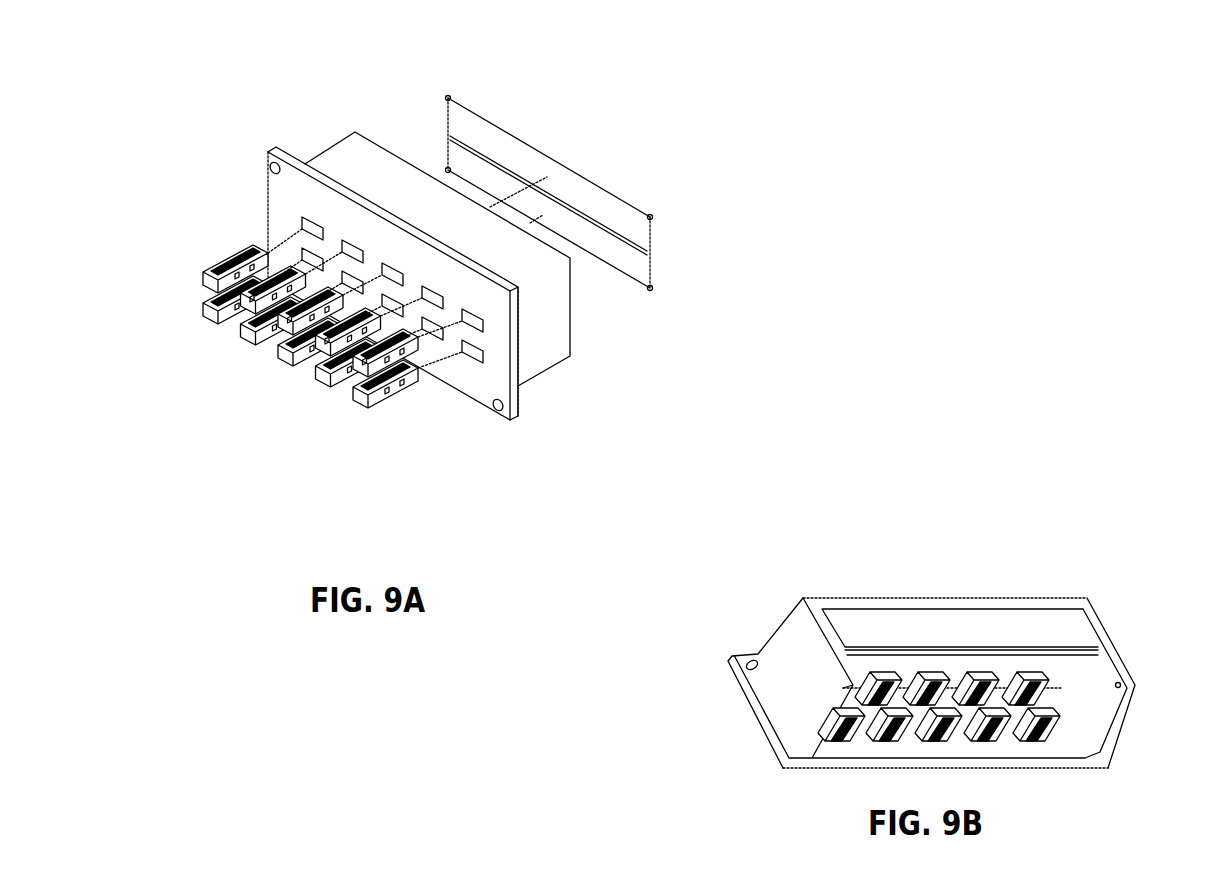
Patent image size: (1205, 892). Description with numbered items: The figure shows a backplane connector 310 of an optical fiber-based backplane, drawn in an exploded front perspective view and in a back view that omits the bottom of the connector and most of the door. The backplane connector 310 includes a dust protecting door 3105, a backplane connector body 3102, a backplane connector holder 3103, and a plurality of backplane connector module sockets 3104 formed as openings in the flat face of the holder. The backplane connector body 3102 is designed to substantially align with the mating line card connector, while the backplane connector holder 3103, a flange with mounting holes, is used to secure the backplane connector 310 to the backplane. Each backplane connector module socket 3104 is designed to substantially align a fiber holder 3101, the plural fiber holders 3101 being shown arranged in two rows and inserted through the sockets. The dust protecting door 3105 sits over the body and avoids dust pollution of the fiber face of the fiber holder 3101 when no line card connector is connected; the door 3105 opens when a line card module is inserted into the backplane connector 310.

In FIG. 9A, the backplane connector 310 is at (407, 293).
In FIG. 9A, the fiber holder 3101 is at (210, 262).
In FIG. 9B, the fiber holder 3101 is at (934, 658).
In FIG. 9A, the backplane connector body 3102 is at (557, 382).
In FIG. 9B, the backplane connector body 3102 is at (794, 658).
In FIG. 9A, the backplane connector holder 3103 is at (502, 426).
In FIG. 9A, the backplane connector module socket 3104 is at (454, 366).
In FIG. 9A, the dust protecting door 3105 is at (555, 152).
In FIG. 9B, the dust protecting door 3105 is at (1066, 625).